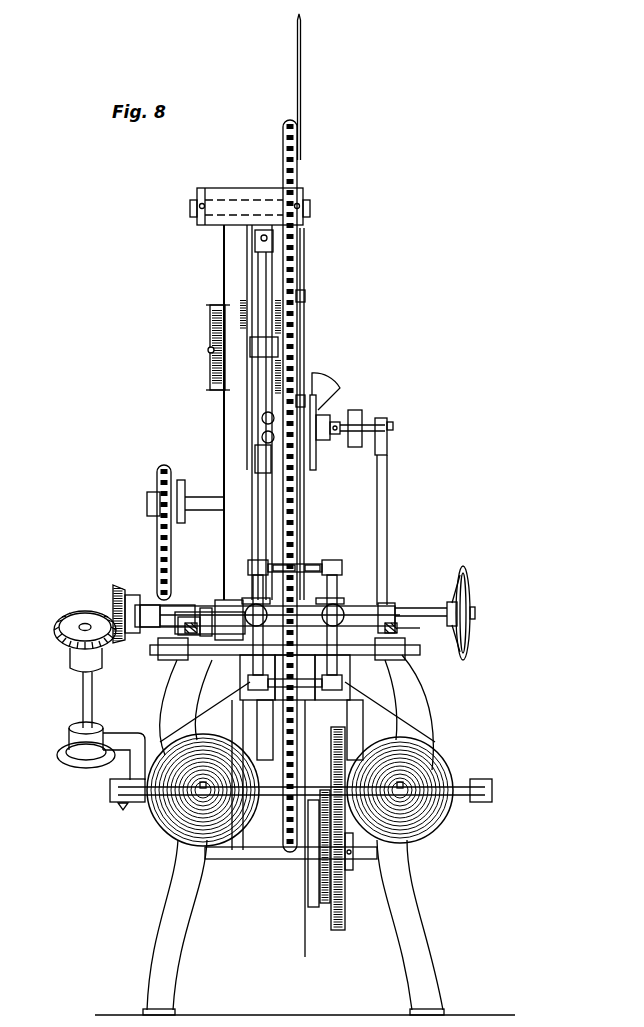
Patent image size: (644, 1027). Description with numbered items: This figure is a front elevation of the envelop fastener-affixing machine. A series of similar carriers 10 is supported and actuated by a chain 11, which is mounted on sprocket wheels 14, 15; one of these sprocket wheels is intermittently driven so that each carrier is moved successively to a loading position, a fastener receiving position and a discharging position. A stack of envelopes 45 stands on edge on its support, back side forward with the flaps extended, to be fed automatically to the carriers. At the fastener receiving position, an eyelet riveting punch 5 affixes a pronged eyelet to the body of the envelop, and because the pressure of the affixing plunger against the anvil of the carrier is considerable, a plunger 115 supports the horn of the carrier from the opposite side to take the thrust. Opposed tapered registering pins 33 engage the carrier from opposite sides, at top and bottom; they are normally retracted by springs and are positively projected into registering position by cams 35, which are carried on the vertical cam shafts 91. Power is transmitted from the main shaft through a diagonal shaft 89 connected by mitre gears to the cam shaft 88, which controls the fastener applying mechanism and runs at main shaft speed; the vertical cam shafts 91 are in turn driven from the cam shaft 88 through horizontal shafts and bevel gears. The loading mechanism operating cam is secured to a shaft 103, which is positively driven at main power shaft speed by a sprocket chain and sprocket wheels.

The carrier 10 is at (301, 110).
The chain 11 is at (297, 273).
The sprocket wheel 14 is at (297, 184).
The stack of envelopes 45 is at (213, 330).
The shaft 103 is at (150, 505).
The registering pin 33 is at (318, 562).
The cam 35 is at (242, 566).
The eyelet riveting punch 5 is at (348, 628).
The cam shaft 88 is at (110, 604).
The diagonal shaft 89 is at (84, 701).
The plunger 115 is at (215, 657).
The vertical cam shaft 91 is at (252, 672).
The sprocket wheel 15 is at (288, 826).